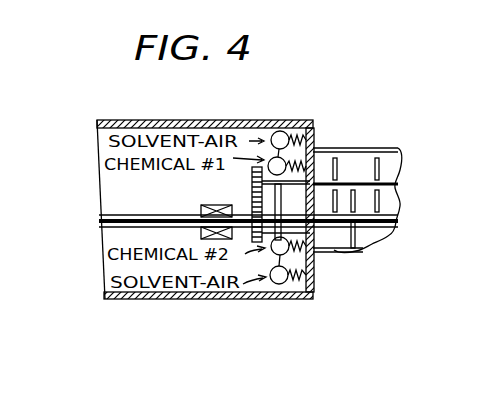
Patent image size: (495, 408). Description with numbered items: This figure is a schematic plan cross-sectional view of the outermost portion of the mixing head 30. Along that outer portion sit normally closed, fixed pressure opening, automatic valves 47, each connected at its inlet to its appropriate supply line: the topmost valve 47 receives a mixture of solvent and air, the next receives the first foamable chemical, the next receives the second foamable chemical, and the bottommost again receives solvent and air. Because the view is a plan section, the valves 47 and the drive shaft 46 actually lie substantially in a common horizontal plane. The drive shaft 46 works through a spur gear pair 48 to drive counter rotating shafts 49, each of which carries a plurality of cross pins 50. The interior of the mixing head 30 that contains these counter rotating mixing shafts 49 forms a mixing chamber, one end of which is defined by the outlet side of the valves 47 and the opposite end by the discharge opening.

The mixing head 30 is at (270, 118).
The drive shaft 46 is at (248, 210).
The automatic valves 47 is at (300, 150).
The spur gear pair 48 is at (255, 204).
The counter rotating shafts 49 is at (400, 207).
The cross pins 50 is at (340, 183).